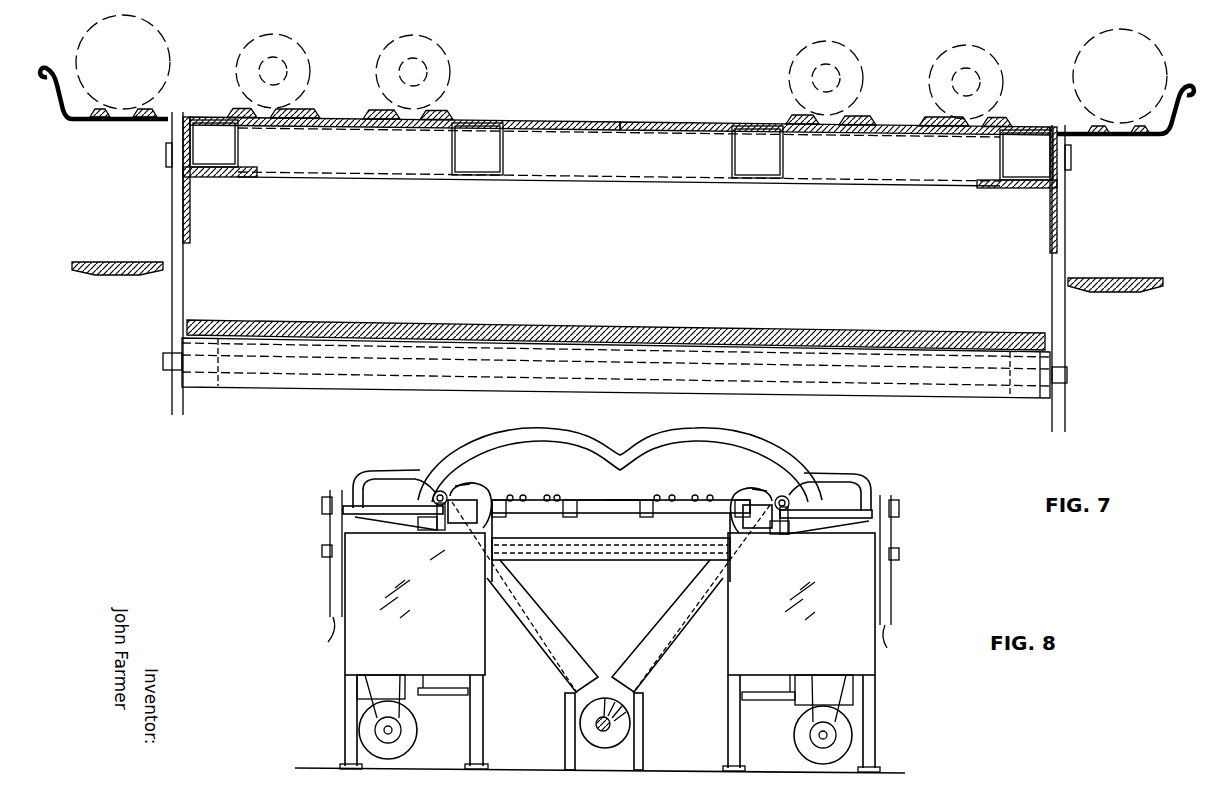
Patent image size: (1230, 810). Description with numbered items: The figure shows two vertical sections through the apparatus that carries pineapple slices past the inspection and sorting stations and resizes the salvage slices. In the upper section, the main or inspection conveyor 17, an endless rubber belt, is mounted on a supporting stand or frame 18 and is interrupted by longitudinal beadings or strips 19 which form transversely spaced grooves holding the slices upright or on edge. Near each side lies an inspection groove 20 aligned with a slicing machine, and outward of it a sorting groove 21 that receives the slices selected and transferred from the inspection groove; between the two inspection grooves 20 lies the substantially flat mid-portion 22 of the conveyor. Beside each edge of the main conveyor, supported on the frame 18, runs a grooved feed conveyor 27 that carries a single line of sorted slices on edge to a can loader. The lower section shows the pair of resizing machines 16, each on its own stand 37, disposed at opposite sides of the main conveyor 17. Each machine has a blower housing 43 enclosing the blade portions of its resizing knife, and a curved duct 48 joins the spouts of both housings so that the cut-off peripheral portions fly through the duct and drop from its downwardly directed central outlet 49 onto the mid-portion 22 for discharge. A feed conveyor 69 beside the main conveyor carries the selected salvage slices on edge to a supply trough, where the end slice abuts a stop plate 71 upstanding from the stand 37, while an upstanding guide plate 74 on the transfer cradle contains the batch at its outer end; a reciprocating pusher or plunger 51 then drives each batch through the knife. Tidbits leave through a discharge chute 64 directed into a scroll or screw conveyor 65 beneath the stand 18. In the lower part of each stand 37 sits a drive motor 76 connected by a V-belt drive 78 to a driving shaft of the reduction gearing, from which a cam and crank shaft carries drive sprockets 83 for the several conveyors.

In FIG. 8, the resizing machine 16 is at (350, 474).
In FIG. 7, the main or inspection conveyor 17 is at (562, 118).
In FIG. 8, the main or inspection conveyor 17 is at (611, 545).
In FIG. 7, the supporting stand or frame 18 is at (1066, 330).
In FIG. 7, the beadings or strips 19 is at (240, 110).
In FIG. 7, the main or inspection groove 20 is at (412, 115).
In FIG. 8, the main or inspection groove 20 is at (553, 495).
In FIG. 7, the sorting groove 21 is at (271, 112).
In FIG. 8, the sorting groove 21 is at (514, 495).
In FIG. 7, the flat mid-portion 22 is at (684, 122).
In FIG. 8, the flat mid-portion 22 is at (603, 500).
In FIG. 7, the feed conveyor 27 is at (117, 110).
In FIG. 8, the stand or support 37 is at (345, 712).
In FIG. 8, the housing 43 is at (418, 493).
In FIG. 8, the duct or tube 48 is at (483, 447).
In FIG. 8, the outlet 49 is at (611, 500).
In FIG. 8, the reciprocating pusher or plunger 51 is at (442, 491).
In FIG. 8, the discharge chute 64 is at (628, 661).
In FIG. 8, the scroll or screw conveyor 65 is at (617, 700).
In FIG. 8, the feed conveyor 69 is at (463, 499).
In FIG. 8, the stop plate 71 is at (483, 482).
In FIG. 8, the guide plate 74 is at (486, 490).
In FIG. 8, the drive motor 76 is at (417, 735).
In FIG. 8, the V-belt drive 78 is at (368, 687).
In FIG. 8, the drive sprockets 83 is at (328, 642).